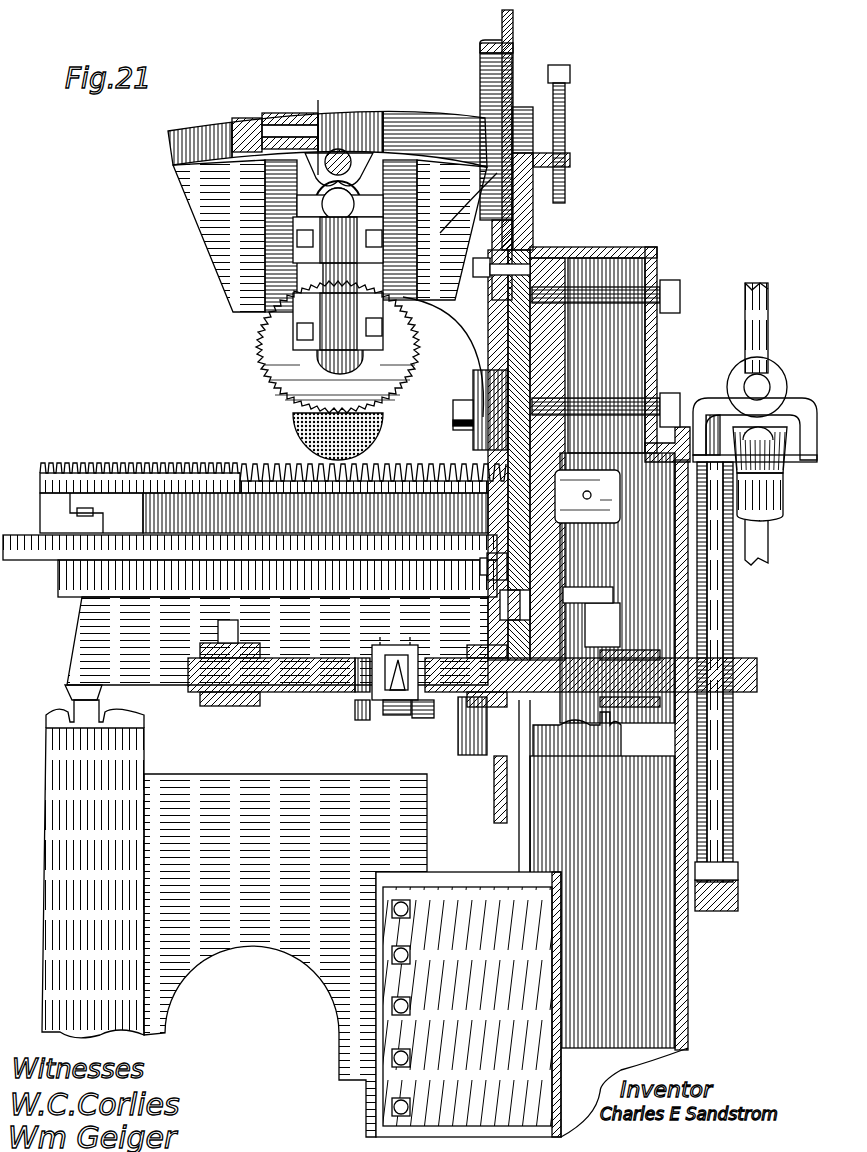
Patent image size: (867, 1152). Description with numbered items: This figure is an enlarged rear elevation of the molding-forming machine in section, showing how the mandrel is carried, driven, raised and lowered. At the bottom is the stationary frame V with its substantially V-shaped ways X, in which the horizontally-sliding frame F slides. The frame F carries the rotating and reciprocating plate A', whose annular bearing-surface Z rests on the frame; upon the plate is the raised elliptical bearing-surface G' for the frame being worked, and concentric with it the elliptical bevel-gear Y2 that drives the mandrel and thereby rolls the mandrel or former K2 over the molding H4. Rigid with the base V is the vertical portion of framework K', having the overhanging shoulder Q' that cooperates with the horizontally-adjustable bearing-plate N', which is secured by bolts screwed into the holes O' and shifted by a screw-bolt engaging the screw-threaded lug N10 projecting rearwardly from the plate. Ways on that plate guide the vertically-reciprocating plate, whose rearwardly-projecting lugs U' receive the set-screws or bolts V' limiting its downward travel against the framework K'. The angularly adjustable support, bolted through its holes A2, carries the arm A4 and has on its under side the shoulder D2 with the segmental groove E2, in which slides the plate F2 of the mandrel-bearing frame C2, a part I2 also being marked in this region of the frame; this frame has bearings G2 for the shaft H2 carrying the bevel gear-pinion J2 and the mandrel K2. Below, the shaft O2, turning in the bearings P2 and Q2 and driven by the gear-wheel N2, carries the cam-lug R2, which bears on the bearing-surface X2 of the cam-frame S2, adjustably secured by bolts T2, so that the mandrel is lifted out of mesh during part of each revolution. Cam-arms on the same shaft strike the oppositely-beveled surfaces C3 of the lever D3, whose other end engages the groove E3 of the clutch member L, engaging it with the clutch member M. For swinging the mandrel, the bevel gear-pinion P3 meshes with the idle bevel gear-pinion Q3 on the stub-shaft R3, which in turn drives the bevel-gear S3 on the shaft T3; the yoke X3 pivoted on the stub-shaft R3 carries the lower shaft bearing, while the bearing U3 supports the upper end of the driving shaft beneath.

The mandrel-bearing frame C2 is at (272, 215).
The segmental groove E2 is at (247, 128).
The plate F2 is at (290, 130).
The shoulder D2 is at (352, 148).
The index plate I2 is at (360, 155).
The arm A4 is at (487, 44).
The bearings G2 is at (322, 245).
The shaft H2 is at (300, 297).
The bevel gear-pinion J2 is at (310, 347).
The mandrel or former K2 is at (292, 430).
The elliptical bevel-gear Y2 is at (70, 462).
The molding H4 is at (373, 483).
The rotating and reciprocating plate A' is at (73, 514).
The raised elliptical bearing-surface G' is at (315, 518).
The annular bearing-surface Z is at (57, 562).
The horizontally-sliding frame F is at (75, 655).
The shaft O2 is at (757, 675).
The bearing P2 is at (200, 650).
The lever D3 is at (375, 655).
The oppositely-beveled surfaces C3 is at (385, 705).
The clutch member L is at (362, 720).
The groove E3 is at (418, 718).
The clutch member M is at (458, 725).
The cam-lug R2 is at (485, 645).
The bolts T2 is at (480, 566).
The bearing-surface X2 is at (520, 612).
The overhanging shoulder Q' is at (561, 440).
The rearwardly-projecting lugs U' is at (570, 158).
The set-screws or bolts V' is at (571, 134).
The holes A2 is at (473, 268).
The holes O' is at (610, 353).
The vertical portion of framework K' is at (617, 684).
The bearing Q2 is at (622, 655).
The screw-threaded lug N10 is at (500, 468).
The stub-shaft R3 is at (453, 415).
The shaft T3 is at (756, 317).
The bevel-gear S3 is at (770, 360).
The yoke X3 is at (795, 398).
The idle bevel gear-pinion Q3 is at (718, 398).
The bevel gear-pinion P3 is at (778, 505).
The bearing U3 is at (768, 540).
The gear-wheel N2 is at (733, 780).
The V-shaped ways X is at (331, 869).
The stationary frame V is at (344, 927).
The cam-frame S2 is at (490, 760).